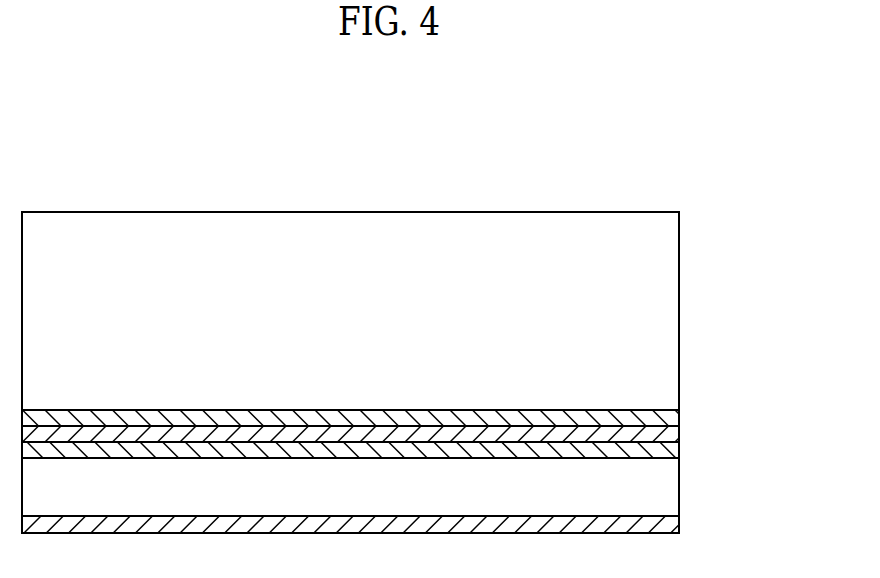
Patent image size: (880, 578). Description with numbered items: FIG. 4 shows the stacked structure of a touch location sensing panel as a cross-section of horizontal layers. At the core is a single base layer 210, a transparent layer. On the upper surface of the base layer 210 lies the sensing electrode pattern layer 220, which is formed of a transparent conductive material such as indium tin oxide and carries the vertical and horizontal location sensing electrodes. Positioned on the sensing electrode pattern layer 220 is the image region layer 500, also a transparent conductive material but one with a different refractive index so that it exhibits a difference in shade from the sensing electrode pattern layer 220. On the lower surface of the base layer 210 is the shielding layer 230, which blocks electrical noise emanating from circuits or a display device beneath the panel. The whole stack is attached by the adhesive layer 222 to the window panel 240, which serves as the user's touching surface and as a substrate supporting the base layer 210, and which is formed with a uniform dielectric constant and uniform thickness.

The window panel 240 is at (680, 319).
The adhesive layer 222 is at (681, 420).
The image region layer 500 is at (681, 433).
The sensing electrode pattern layer 220 is at (680, 452).
The base layer 210 is at (680, 488).
The shielding layer 230 is at (680, 522).